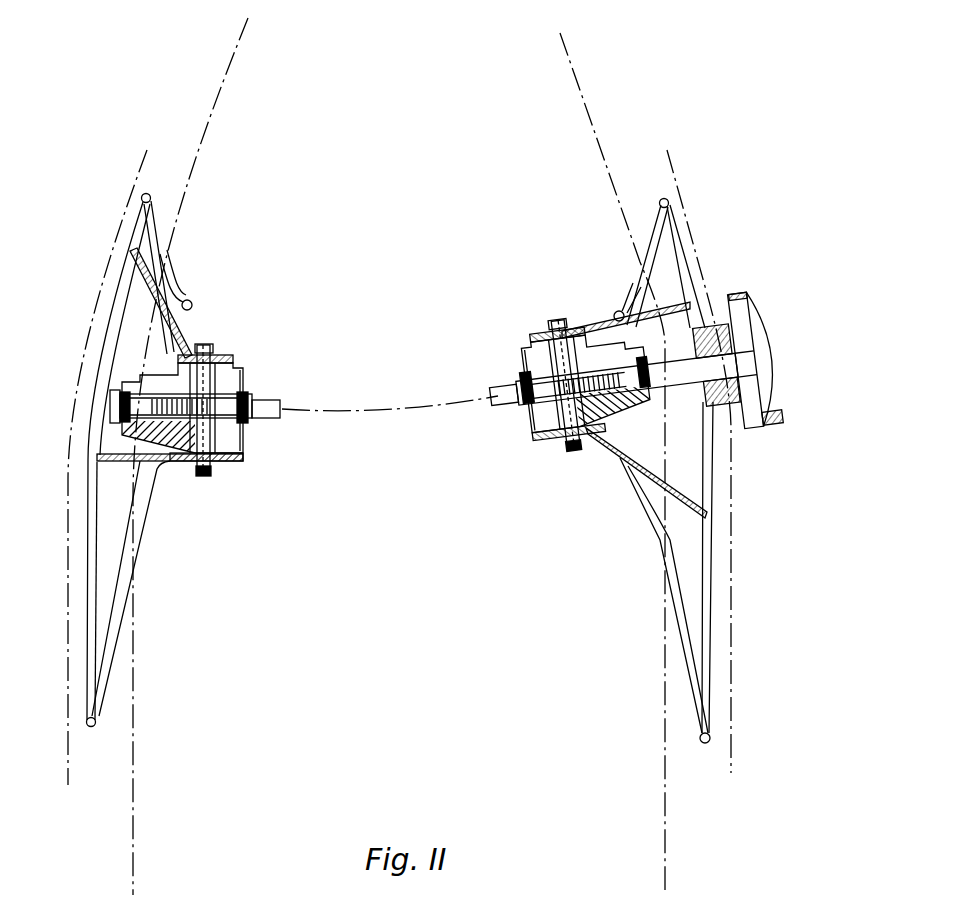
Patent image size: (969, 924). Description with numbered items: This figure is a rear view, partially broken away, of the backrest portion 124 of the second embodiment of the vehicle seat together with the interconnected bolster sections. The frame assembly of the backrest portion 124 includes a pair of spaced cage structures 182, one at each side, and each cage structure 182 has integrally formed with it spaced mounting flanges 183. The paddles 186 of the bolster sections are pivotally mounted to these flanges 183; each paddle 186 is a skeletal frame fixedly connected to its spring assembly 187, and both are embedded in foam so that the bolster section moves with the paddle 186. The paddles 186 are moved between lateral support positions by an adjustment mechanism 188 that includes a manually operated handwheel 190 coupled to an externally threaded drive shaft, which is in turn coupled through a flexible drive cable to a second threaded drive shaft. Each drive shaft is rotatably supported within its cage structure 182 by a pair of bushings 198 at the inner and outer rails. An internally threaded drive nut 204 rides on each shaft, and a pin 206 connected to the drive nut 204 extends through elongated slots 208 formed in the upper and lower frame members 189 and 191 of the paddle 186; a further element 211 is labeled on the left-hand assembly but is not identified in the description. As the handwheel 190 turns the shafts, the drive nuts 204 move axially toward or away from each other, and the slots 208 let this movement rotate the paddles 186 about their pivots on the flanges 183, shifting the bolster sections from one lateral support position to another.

The backrest portion 124 is at (573, 60).
The cage structure 182 is at (252, 383).
The mounting flange 183 is at (232, 362).
The paddle 186 is at (192, 329).
The spring assembly 187 is at (107, 298).
The adjustment mechanism 188 is at (777, 352).
The upper frame member 189 is at (158, 283).
The handwheel 190 is at (732, 293).
The lower frame member 191 is at (137, 462).
The bushing 198 is at (133, 393).
The drive nut 204 is at (585, 356).
The pin 206 is at (205, 345).
The elongated slot 208 is at (226, 358).
The sleeve 211 is at (197, 383).